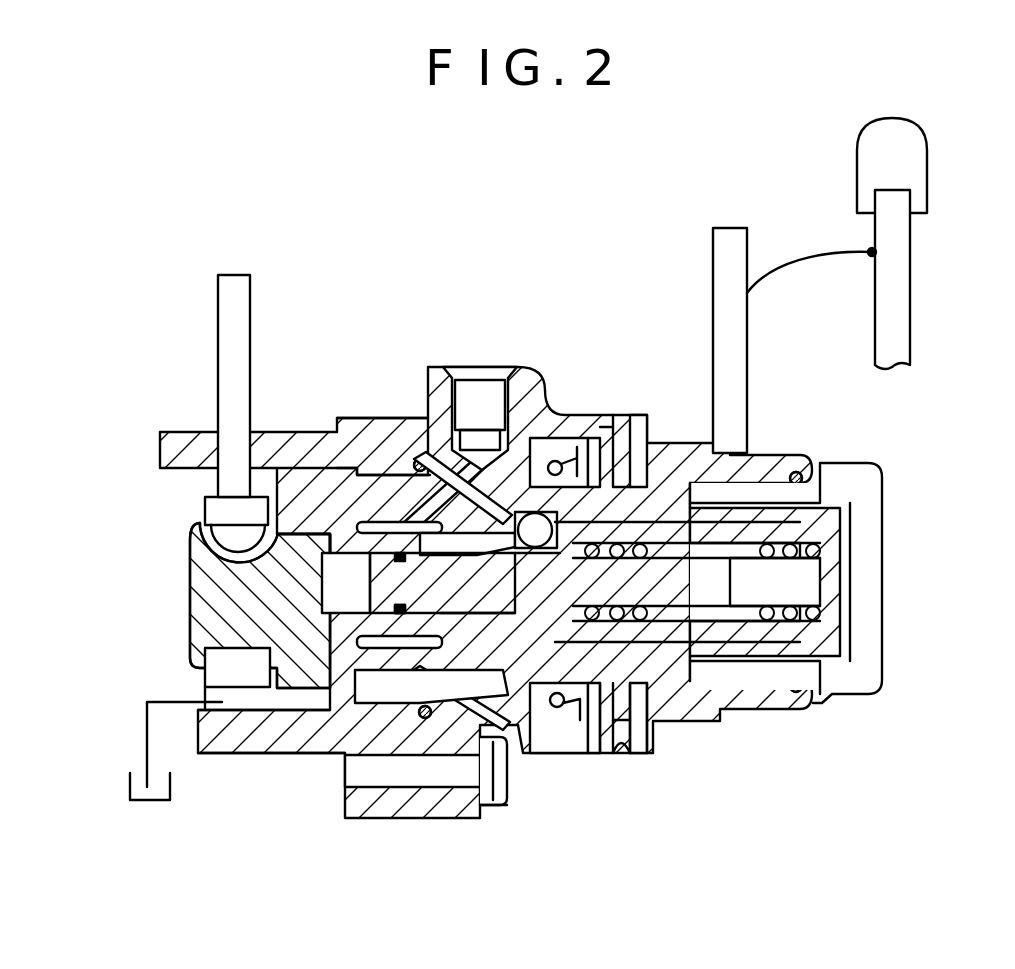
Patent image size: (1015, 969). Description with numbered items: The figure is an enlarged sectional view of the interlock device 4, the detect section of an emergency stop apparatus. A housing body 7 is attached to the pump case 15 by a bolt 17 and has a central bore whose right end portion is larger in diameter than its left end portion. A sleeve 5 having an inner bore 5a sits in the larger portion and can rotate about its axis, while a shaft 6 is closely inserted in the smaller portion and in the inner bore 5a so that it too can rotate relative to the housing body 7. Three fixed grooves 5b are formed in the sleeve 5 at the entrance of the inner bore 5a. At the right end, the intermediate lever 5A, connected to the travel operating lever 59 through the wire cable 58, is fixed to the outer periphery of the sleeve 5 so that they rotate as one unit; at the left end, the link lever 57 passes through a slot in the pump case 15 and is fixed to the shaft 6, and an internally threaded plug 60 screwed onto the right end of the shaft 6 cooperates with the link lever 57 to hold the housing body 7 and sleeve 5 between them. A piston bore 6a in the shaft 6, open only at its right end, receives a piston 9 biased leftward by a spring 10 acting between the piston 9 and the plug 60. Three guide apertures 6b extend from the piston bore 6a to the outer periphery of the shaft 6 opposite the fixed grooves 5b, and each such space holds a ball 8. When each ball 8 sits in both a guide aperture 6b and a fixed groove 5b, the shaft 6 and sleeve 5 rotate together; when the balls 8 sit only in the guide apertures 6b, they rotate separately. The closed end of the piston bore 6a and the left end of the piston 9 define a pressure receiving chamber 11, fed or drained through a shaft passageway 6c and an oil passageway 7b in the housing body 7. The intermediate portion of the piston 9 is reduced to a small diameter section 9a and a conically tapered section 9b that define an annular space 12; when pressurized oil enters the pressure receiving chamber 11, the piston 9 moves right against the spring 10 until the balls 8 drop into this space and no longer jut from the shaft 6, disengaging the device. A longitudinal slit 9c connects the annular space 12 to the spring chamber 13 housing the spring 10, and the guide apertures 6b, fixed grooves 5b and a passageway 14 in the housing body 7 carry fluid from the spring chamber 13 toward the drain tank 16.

The interlock device 4 is at (190, 378).
The sleeve 5 is at (683, 466).
The inner bore 5a is at (676, 530).
The intermediate lever 5A is at (748, 330).
The fixed grooves 5b is at (516, 503).
The shaft 6 is at (208, 601).
The piston bore 6a is at (593, 752).
The guide apertures 6b is at (457, 458).
The shaft passageway 6c is at (328, 528).
The housing body 7 is at (325, 528).
The oil passageway 7b is at (378, 528).
The ball 8 is at (537, 513).
The piston 9 is at (505, 552).
The small diameter section 9a is at (458, 603).
The conically tapered section 9b is at (572, 620).
The slit 9c is at (547, 548).
The spring 10 is at (807, 528).
The pressure receiving chamber 11 is at (328, 488).
The annular space 12 is at (505, 790).
The spring chamber 13 is at (803, 594).
The passageway 14 is at (403, 695).
The pump case 15 is at (230, 733).
The drain tank 16 is at (128, 778).
The bolt 17 is at (506, 795).
The link lever 57 is at (244, 309).
The wire cable 58 is at (803, 250).
The travel operating lever 59 is at (902, 310).
The plug 60 is at (836, 570).